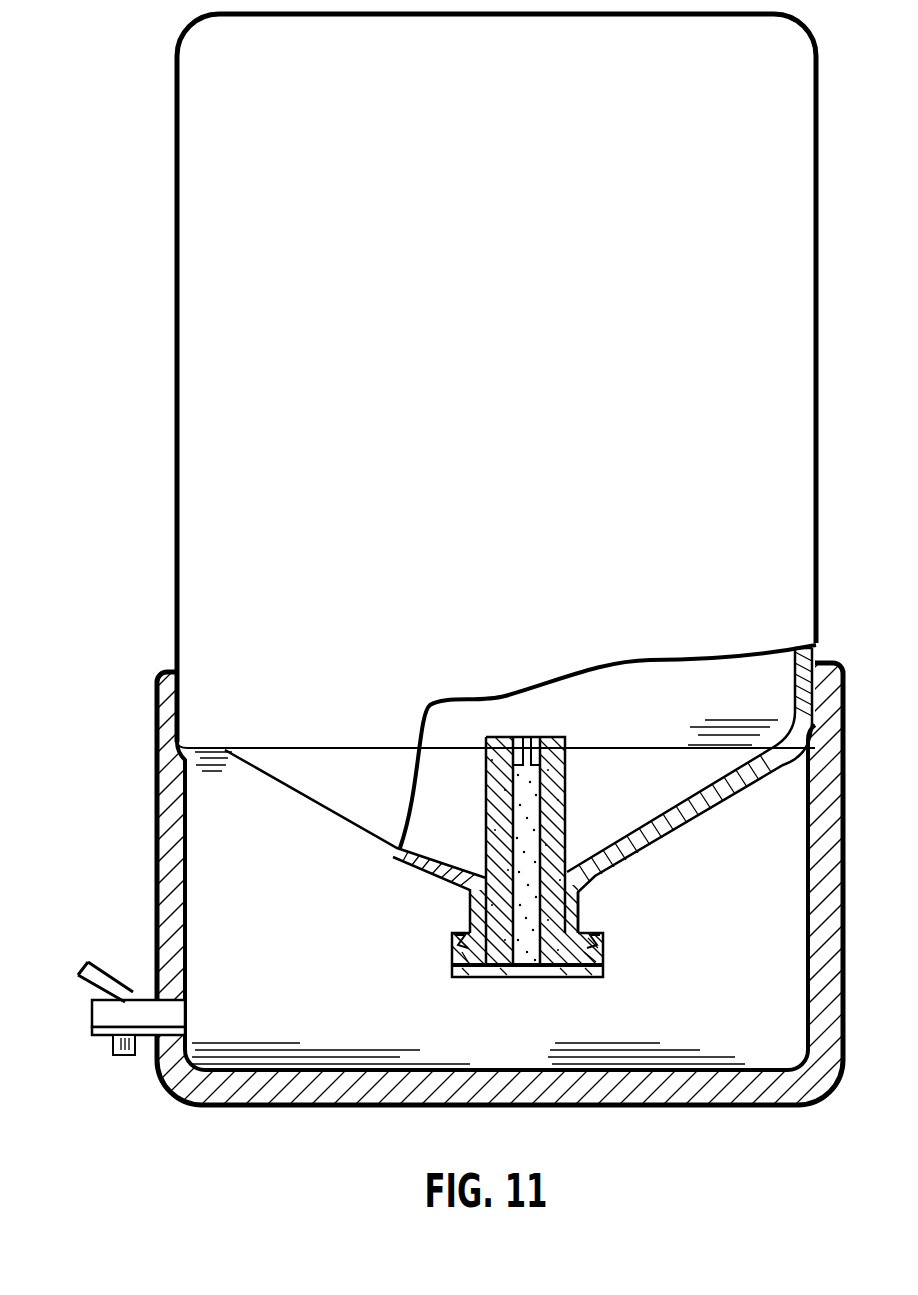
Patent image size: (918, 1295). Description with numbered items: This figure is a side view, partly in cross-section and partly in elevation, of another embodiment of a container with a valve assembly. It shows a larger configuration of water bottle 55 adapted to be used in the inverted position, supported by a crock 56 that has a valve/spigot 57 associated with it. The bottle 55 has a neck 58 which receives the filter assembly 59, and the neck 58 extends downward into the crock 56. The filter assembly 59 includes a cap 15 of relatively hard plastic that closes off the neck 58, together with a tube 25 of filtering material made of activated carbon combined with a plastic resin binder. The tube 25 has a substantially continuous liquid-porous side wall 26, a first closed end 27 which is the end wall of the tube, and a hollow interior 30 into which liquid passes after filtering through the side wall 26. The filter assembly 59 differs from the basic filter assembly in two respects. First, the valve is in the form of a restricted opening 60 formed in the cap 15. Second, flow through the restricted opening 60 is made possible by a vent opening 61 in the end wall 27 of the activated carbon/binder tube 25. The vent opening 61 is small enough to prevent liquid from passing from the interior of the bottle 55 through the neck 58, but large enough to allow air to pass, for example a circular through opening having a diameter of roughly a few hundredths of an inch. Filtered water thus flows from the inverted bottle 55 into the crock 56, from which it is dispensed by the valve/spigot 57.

The cap 15 is at (524, 987).
The tube of filtering material 25 is at (572, 838).
The liquid-porous side wall 26 is at (529, 845).
The first closed end 27 is at (518, 772).
The hollow interior 30 is at (592, 883).
The water bottle 55 is at (496, 271).
The crock 56 is at (157, 753).
The valve/spigot 57 is at (80, 1001).
The neck 58 is at (582, 907).
The filter assembly 59 is at (606, 977).
The restricted opening 60 is at (517, 981).
The vent opening 61 is at (524, 737).